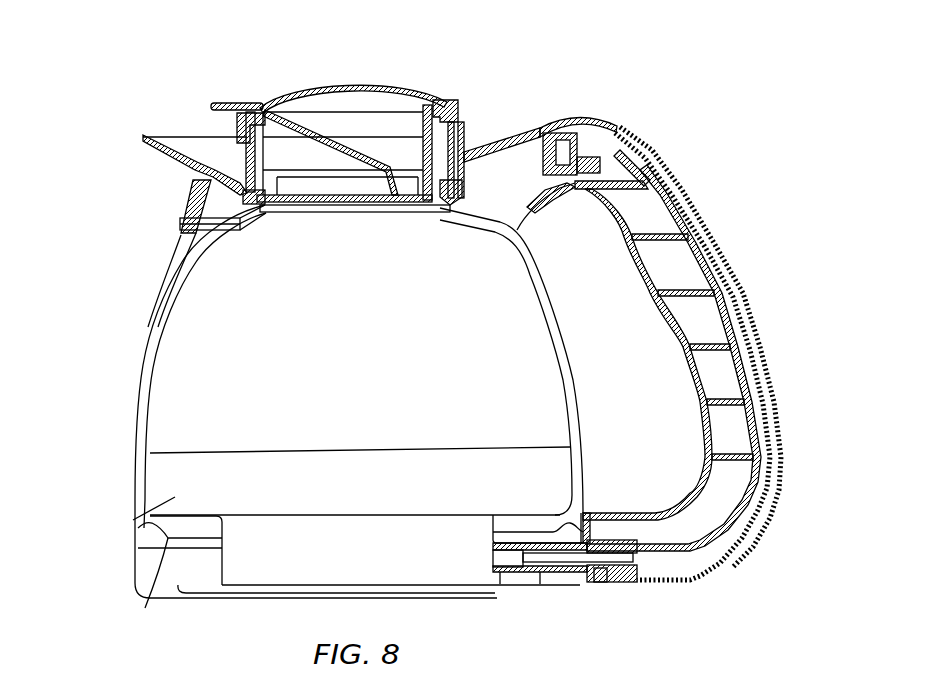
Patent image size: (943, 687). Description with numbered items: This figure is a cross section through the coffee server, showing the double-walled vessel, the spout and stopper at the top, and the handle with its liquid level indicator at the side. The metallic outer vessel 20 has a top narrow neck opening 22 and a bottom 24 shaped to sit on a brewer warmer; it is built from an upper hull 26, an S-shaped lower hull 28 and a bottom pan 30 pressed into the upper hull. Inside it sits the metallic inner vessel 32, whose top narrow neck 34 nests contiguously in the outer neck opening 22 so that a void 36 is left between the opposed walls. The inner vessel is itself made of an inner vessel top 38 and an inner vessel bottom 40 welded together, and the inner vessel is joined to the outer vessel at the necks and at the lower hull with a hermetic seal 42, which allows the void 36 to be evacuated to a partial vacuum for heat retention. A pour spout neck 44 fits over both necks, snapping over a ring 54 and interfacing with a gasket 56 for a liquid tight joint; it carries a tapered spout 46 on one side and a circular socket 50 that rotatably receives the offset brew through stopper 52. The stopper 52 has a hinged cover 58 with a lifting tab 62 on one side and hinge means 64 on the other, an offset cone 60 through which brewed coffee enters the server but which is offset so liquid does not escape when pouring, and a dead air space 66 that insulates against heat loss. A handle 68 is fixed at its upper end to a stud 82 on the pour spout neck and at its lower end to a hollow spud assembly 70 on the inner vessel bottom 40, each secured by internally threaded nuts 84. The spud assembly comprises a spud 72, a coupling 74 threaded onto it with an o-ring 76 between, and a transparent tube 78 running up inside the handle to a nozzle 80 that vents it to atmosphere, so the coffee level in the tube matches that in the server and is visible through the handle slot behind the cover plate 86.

The outer vessel 20 is at (116, 437).
The top narrow neck opening 22 is at (183, 238).
The bottom 24 is at (287, 594).
The upper hull 26 is at (133, 520).
The lower hull 28 is at (145, 608).
The bottom pan 30 is at (178, 598).
The inner vessel 32 is at (135, 557).
The top narrow neck 34 is at (248, 195).
The void 36 is at (143, 372).
The inner vessel top 38 is at (130, 482).
The inner vessel bottom 40 is at (400, 585).
The hermetic seal 42 is at (478, 150).
The pour spout neck 44 is at (540, 133).
The tapered spout 46 is at (143, 137).
The socket 50 is at (200, 185).
The offset brew through stopper 52 is at (446, 80).
The ring 54 is at (197, 262).
The gasket 56 is at (255, 192).
The hinged cover 58 is at (400, 93).
The offset cone 60 is at (346, 152).
The lifting tab 62 is at (222, 103).
The hinge means 64 is at (455, 105).
The dead air space 66 is at (309, 157).
The handle 68 is at (712, 230).
The hollow spud assembly 70 is at (537, 586).
The spud 72 is at (500, 586).
The coupling 74 is at (602, 583).
The o-ring 76 is at (560, 582).
The transparent tube 78 is at (762, 357).
The nozzle 80 is at (645, 157).
The stud 82 is at (553, 137).
The internally threaded nuts 84 is at (590, 160).
The cover plate 86 is at (766, 510).